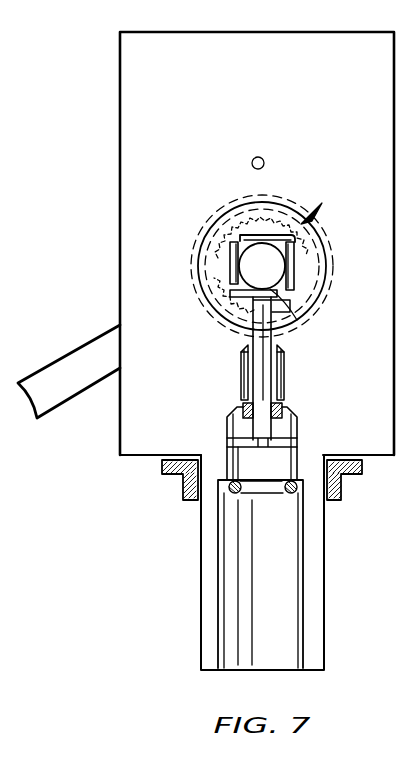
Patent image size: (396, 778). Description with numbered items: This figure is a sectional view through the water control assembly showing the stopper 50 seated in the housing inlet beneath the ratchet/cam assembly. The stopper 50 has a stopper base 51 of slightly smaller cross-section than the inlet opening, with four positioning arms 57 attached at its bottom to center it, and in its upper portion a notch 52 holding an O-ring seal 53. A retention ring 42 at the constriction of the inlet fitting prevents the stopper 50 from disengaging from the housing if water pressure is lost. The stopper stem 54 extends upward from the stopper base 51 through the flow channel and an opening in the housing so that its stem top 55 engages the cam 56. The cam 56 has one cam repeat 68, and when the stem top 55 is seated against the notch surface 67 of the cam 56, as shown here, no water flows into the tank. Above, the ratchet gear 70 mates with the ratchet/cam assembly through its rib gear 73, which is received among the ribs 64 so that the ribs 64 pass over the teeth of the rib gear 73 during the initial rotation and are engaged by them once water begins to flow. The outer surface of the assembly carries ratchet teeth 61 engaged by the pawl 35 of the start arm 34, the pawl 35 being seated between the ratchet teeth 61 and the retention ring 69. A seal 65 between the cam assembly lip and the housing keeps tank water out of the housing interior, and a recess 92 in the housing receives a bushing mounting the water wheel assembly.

The start arm 34 is at (60, 357).
The pawl 35 is at (198, 284).
The retention ring 42 is at (263, 493).
The stopper 50 is at (282, 369).
The stopper base 51 is at (277, 430).
The notch 52 is at (278, 402).
The O-ring seal 53 is at (285, 410).
The stopper stem 54 is at (262, 367).
The stem top 55 is at (272, 330).
The cam 56 is at (306, 268).
The positioning arms 57 is at (263, 447).
The ratchet teeth 61 is at (197, 249).
The ribs 64 is at (302, 225).
The seal 65 is at (248, 195).
The notch surface 67 is at (283, 310).
The cam repeat 68 is at (250, 313).
The retention ring 69 is at (221, 218).
The ratchet gear 70 is at (248, 262).
The rib gear 73 is at (300, 263).
The recess 92 is at (264, 167).